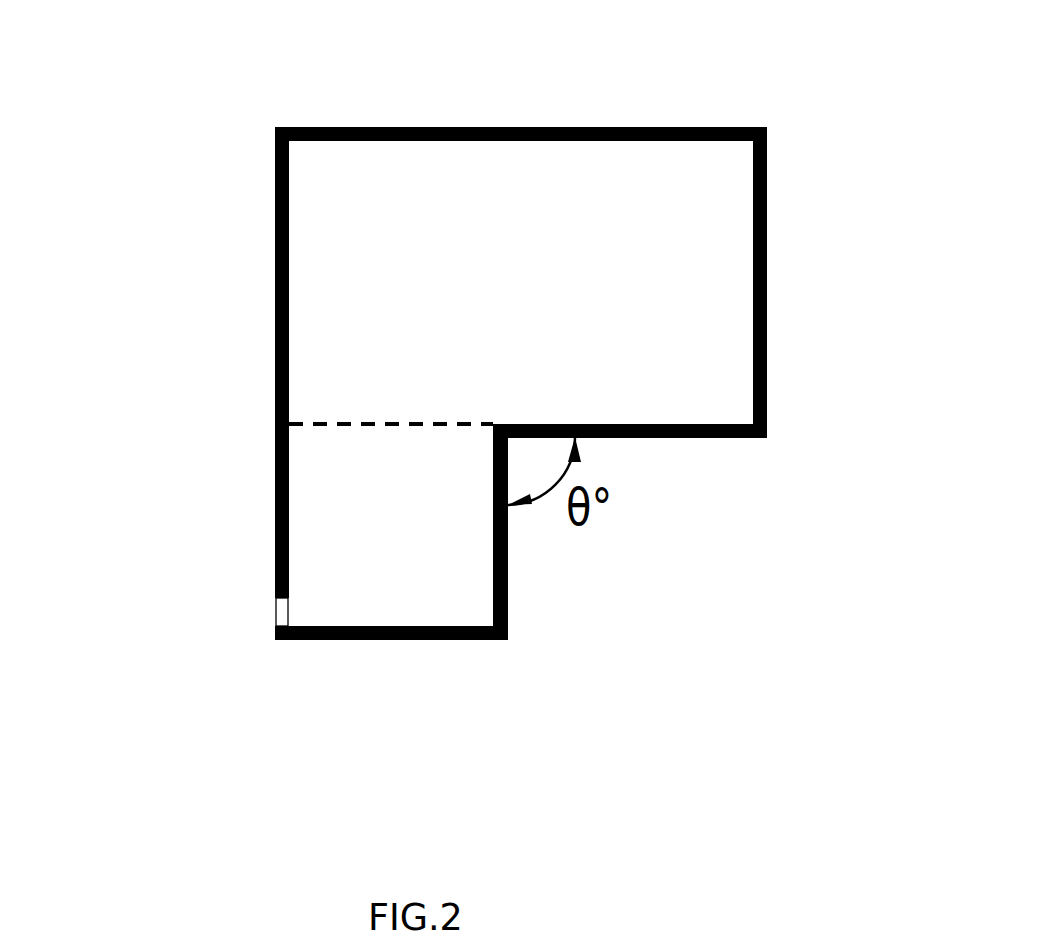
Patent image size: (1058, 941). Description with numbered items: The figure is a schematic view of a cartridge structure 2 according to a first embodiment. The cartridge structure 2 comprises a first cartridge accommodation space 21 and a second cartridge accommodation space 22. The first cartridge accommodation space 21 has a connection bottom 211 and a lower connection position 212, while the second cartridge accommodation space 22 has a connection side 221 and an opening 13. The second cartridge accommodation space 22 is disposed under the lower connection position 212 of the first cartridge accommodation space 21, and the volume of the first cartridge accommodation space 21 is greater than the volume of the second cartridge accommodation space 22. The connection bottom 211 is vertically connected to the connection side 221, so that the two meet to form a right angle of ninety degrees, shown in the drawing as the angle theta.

The cartridge structure 2 is at (543, 91).
The first cartridge accommodation space 21 is at (729, 270).
The connection bottom 211 is at (662, 438).
The lower connection position 212 is at (393, 385).
The second cartridge accommodation space 22 is at (314, 492).
The connection side 221 is at (508, 600).
The opening 13 is at (277, 617).